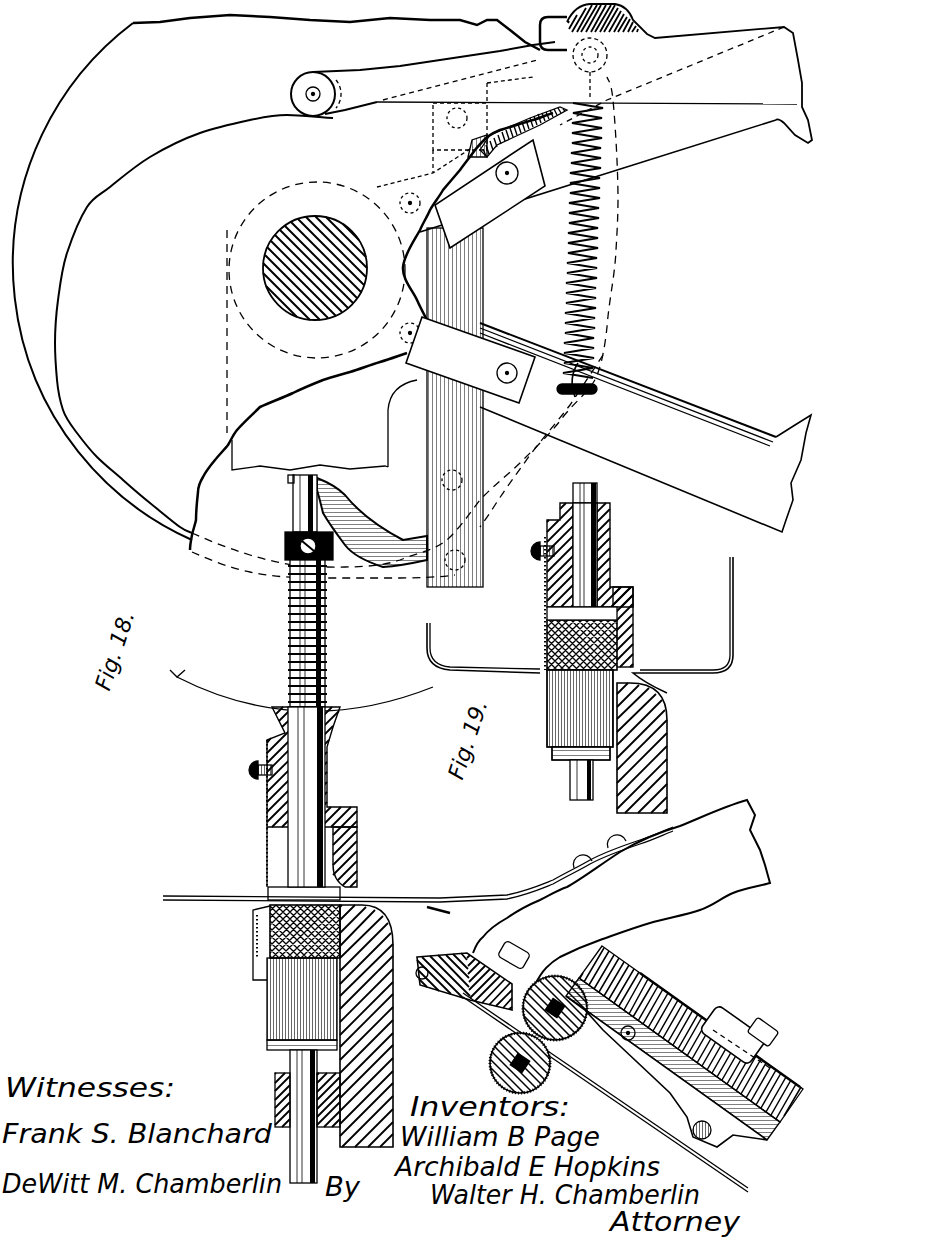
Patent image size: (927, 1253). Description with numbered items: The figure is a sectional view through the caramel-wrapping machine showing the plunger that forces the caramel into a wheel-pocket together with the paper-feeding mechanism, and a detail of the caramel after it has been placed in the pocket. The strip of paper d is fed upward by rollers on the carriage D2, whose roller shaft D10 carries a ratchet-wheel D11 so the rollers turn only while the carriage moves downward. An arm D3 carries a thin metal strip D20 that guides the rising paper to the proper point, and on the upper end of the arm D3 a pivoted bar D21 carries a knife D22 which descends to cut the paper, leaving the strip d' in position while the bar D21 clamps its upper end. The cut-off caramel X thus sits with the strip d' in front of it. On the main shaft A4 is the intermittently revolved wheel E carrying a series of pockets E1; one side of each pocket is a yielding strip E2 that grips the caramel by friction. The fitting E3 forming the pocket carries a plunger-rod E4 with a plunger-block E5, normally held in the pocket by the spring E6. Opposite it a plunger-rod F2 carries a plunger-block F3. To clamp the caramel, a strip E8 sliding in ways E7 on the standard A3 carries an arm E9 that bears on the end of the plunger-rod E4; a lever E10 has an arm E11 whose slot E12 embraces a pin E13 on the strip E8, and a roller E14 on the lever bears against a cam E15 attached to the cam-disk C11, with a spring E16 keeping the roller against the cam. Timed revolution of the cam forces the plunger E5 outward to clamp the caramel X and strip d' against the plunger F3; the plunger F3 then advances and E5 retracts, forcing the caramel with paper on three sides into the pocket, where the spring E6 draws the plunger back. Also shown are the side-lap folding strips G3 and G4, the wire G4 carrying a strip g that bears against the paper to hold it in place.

In FIG. 18, the cam-disk C11 is at (62, 96).
In FIG. 18, the cam E15 is at (167, 146).
In FIG. 18, the roller E14 is at (298, 76).
In FIG. 18, the slot E12 is at (440, 97).
In FIG. 18, the pin E13 is at (447, 125).
In FIG. 18, the arm E11 is at (541, 40).
In FIG. 18, the lever E10 is at (655, 82).
In FIG. 18, the standard A3 is at (657, 153).
In FIG. 18, the ways E7 is at (493, 190).
In FIG. 18, the spring E16 is at (597, 253).
In FIG. 18, the strip E8 is at (470, 438).
In FIG. 18, the main shaft A4 is at (300, 218).
In FIG. 18, the arm E9 is at (348, 498).
In FIG. 18, the spring E6 is at (290, 650).
In FIG. 18, the wheel E is at (186, 677).
In FIG. 18, the plunger-rod E4 is at (336, 710).
In FIG. 19, the plunger-rod E4 is at (600, 508).
In FIG. 18, the fitting E3 is at (322, 748).
In FIG. 19, the fitting E3 is at (628, 600).
In FIG. 18, the yielding strip E2 is at (250, 771).
In FIG. 18, the pocket E1 is at (278, 853).
In FIG. 18, the plunger-block E5 is at (266, 873).
In FIG. 19, the plunger-block E5 is at (608, 580).
In FIG. 18, the strip of paper d' is at (301, 881).
In FIG. 18, the caramel X is at (270, 935).
In FIG. 19, the caramel X is at (582, 648).
In FIG. 18, the plunger-block F3 is at (267, 1023).
In FIG. 19, the plunger-block F3 is at (560, 720).
In FIG. 18, the plunger-rod F2 is at (290, 1138).
In FIG. 19, the plunger-rod F2 is at (547, 640).
In FIG. 18, the strip of thin metal D20 is at (478, 898).
In FIG. 18, the arm D3 is at (587, 890).
In FIG. 18, the knife D22 is at (447, 912).
In FIG. 18, the pivoted frame or bar D21 is at (450, 990).
In FIG. 18, the strip of paper d is at (605, 1092).
In FIG. 18, the shaft D10 is at (555, 975).
In FIG. 18, the ratchet-wheel D11 is at (641, 985).
In FIG. 18, the carriage D2 is at (628, 1086).
In FIG. 19, the strip G3 is at (458, 668).
In FIG. 19, the wire strip G4 is at (680, 668).
In FIG. 19, the strip g is at (712, 668).